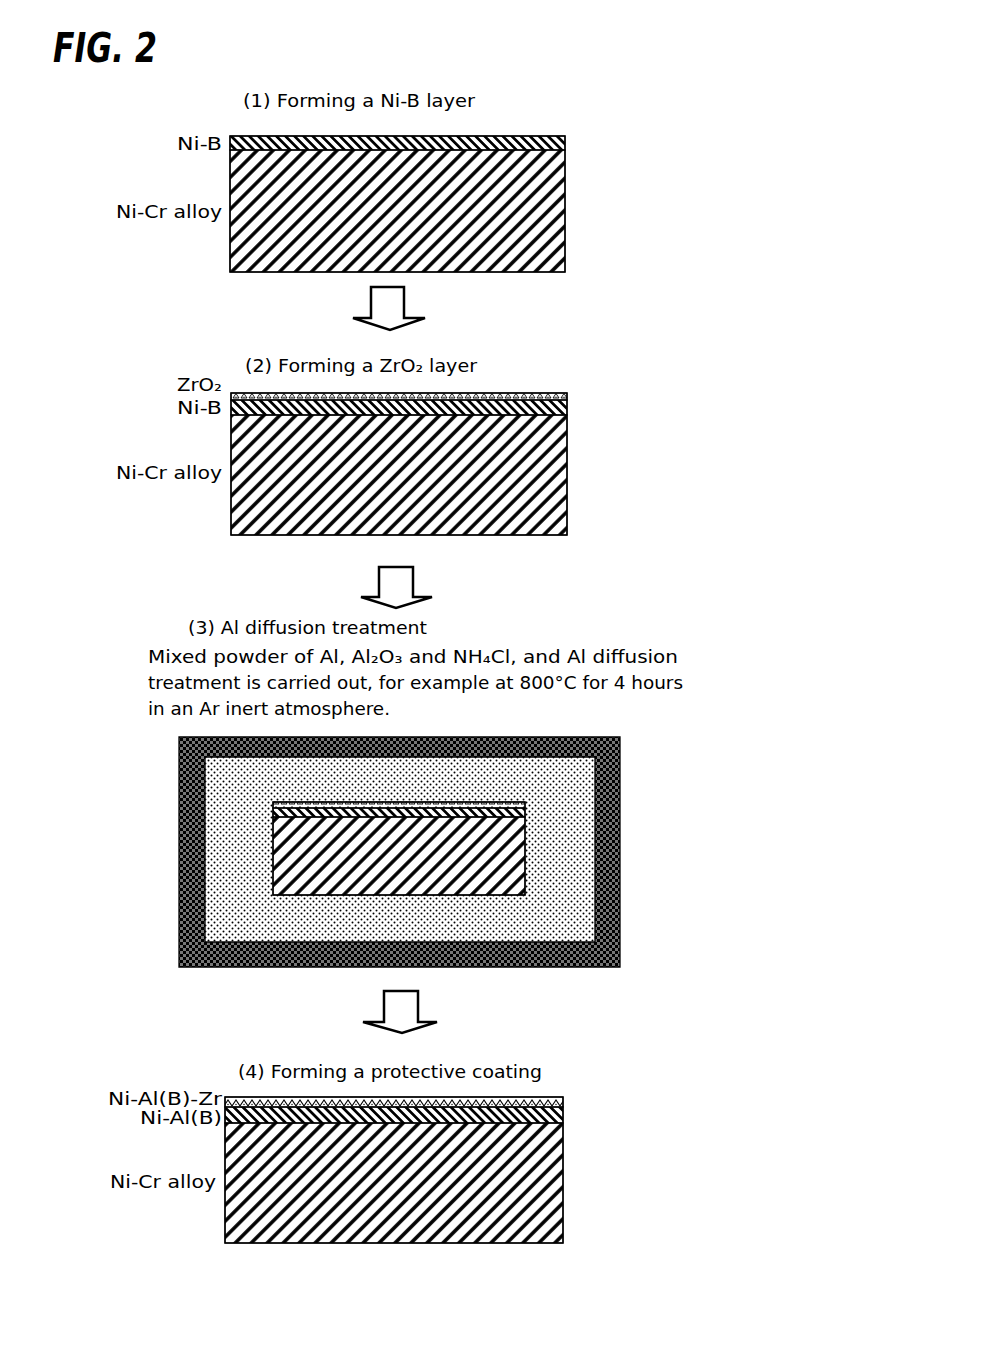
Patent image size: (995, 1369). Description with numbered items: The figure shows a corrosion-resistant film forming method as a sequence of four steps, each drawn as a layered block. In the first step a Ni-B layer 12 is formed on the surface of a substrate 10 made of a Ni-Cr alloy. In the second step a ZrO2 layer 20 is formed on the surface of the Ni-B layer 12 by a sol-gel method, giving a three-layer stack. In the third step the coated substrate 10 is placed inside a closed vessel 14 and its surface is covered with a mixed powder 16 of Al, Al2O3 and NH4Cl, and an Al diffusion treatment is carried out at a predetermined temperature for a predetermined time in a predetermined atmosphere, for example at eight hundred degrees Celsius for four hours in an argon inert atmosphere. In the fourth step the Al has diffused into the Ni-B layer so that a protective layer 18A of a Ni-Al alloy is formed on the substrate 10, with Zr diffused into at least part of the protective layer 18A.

The substrate 10 is at (565, 199).
The Ni-B layer 12 is at (565, 143).
The ZrO2 layer 20 is at (540, 393).
The closed vessel 14 is at (620, 777).
The mixed powder 16 is at (560, 890).
The protective layer 18A is at (563, 1097).